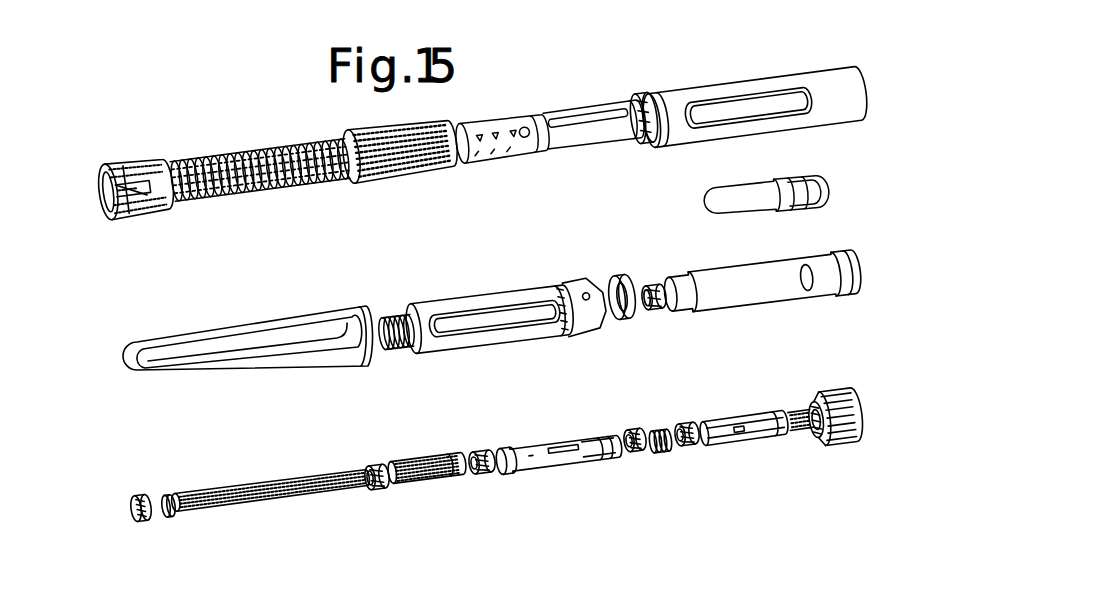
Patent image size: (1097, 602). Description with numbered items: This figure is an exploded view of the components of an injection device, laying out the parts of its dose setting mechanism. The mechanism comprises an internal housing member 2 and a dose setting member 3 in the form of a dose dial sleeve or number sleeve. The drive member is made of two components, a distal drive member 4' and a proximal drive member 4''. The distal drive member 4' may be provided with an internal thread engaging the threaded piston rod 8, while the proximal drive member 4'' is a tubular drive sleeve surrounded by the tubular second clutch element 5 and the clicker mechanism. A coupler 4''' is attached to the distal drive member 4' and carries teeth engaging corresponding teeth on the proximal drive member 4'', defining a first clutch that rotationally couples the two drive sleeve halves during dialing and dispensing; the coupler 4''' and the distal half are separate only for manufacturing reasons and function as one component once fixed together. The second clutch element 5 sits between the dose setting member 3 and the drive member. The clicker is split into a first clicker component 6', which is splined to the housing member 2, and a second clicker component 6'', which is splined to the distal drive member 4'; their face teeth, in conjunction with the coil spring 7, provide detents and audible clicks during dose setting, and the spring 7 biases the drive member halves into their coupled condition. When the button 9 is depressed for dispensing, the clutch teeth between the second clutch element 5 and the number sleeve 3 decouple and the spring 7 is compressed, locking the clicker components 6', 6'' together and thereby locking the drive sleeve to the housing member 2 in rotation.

The housing member 2 is at (281, 189).
The dose setting member 3 is at (460, 168).
The distal drive member 4' is at (416, 452).
The proximal drive member 4'' is at (559, 428).
The coupler 4''' is at (477, 430).
The second clutch element 5 is at (736, 444).
The first clicker component 6' is at (688, 402).
The second clicker component 6'' is at (637, 410).
The coil spring 7 is at (671, 453).
The piston rod 8 is at (257, 487).
The button 9 is at (845, 395).